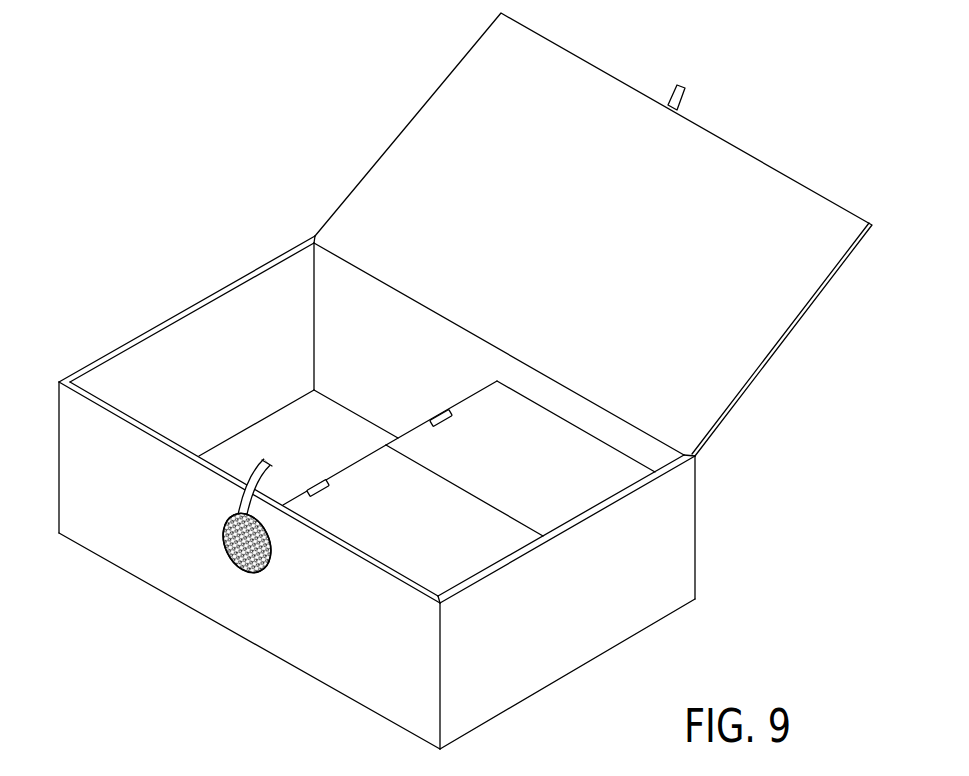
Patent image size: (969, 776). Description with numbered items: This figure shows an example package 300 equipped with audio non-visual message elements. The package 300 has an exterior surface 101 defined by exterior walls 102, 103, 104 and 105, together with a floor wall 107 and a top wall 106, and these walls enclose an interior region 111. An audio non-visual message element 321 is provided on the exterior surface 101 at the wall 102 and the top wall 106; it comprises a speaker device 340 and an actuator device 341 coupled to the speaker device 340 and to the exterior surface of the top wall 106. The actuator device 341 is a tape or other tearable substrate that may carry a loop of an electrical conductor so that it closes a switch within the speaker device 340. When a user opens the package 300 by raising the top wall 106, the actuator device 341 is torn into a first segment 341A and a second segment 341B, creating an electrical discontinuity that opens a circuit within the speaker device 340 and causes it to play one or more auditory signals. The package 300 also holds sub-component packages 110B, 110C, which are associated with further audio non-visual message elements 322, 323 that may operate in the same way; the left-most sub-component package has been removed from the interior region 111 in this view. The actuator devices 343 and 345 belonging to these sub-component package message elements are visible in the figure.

The package 300 is at (462, 381).
The exterior surface 101 is at (373, 485).
The exterior wall 102 is at (118, 552).
The exterior wall 103 is at (537, 684).
The exterior wall 104 is at (428, 322).
The exterior wall 105 is at (261, 263).
The top wall 106 is at (401, 133).
The floor wall 107 is at (327, 444).
The interior region 111 is at (239, 316).
The sub-component package 110B is at (520, 390).
The sub-component package 110C is at (413, 460).
The audio non-visual message element 321 is at (313, 558).
The audio non-visual message element 322 is at (379, 508).
The audio non-visual message element 323 is at (502, 444).
The speaker device 340 is at (260, 575).
The actuator device 341 is at (394, 269).
The first segment 341A is at (252, 462).
The second segment 341B is at (685, 88).
The actuator device 343 is at (329, 492).
The actuator device 345 is at (447, 424).